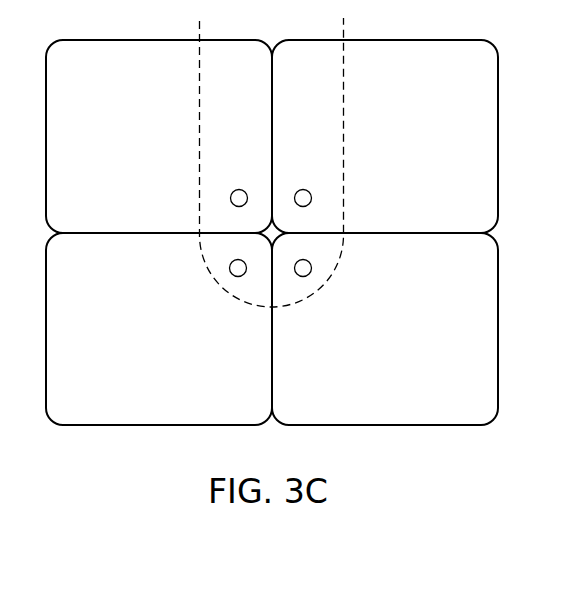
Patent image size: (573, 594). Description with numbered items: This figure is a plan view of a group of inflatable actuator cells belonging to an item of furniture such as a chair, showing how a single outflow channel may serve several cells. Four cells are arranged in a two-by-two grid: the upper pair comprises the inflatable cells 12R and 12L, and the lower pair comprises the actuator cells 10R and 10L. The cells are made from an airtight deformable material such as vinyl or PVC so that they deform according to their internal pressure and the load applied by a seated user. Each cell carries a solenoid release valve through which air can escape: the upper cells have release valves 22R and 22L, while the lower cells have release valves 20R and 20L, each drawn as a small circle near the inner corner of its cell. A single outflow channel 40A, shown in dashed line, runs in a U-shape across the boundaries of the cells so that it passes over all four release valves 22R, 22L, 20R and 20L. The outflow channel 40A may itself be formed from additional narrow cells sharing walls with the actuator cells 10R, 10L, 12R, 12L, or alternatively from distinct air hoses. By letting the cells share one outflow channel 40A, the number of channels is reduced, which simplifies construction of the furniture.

The inflatable cell 12R is at (176, 129).
The inflatable cell 12L is at (391, 129).
The actuator cell 10R is at (176, 367).
The actuator cell 10L is at (391, 367).
The solenoid release valve 22R is at (230, 197).
The solenoid release valve 22L is at (312, 196).
The solenoid release valve 20R is at (233, 275).
The solenoid release valve 20L is at (312, 268).
The outflow channel 40A is at (344, 71).